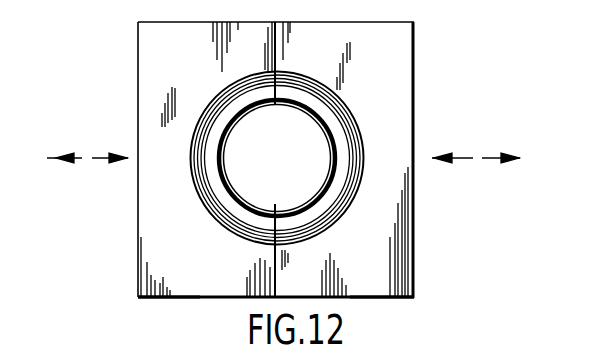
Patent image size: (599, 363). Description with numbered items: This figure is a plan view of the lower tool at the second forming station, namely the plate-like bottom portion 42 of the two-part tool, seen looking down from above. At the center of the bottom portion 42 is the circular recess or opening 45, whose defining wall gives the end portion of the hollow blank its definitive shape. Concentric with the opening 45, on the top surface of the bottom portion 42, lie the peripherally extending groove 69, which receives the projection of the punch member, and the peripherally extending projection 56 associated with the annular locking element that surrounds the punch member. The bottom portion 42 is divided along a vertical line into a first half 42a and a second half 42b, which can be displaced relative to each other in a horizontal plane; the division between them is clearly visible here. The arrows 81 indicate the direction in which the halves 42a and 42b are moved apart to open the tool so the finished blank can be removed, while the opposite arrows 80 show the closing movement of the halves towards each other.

The bottom portion 42 is at (402, 42).
The first half 42a is at (167, 297).
The second half 42b is at (397, 300).
The circular recess or opening 45 is at (286, 166).
The peripherally extending projection 56 is at (356, 130).
The peripherally extending groove 69 is at (343, 167).
The inward direction arrow 80 is at (118, 157).
The arrows 81 is at (61, 157).